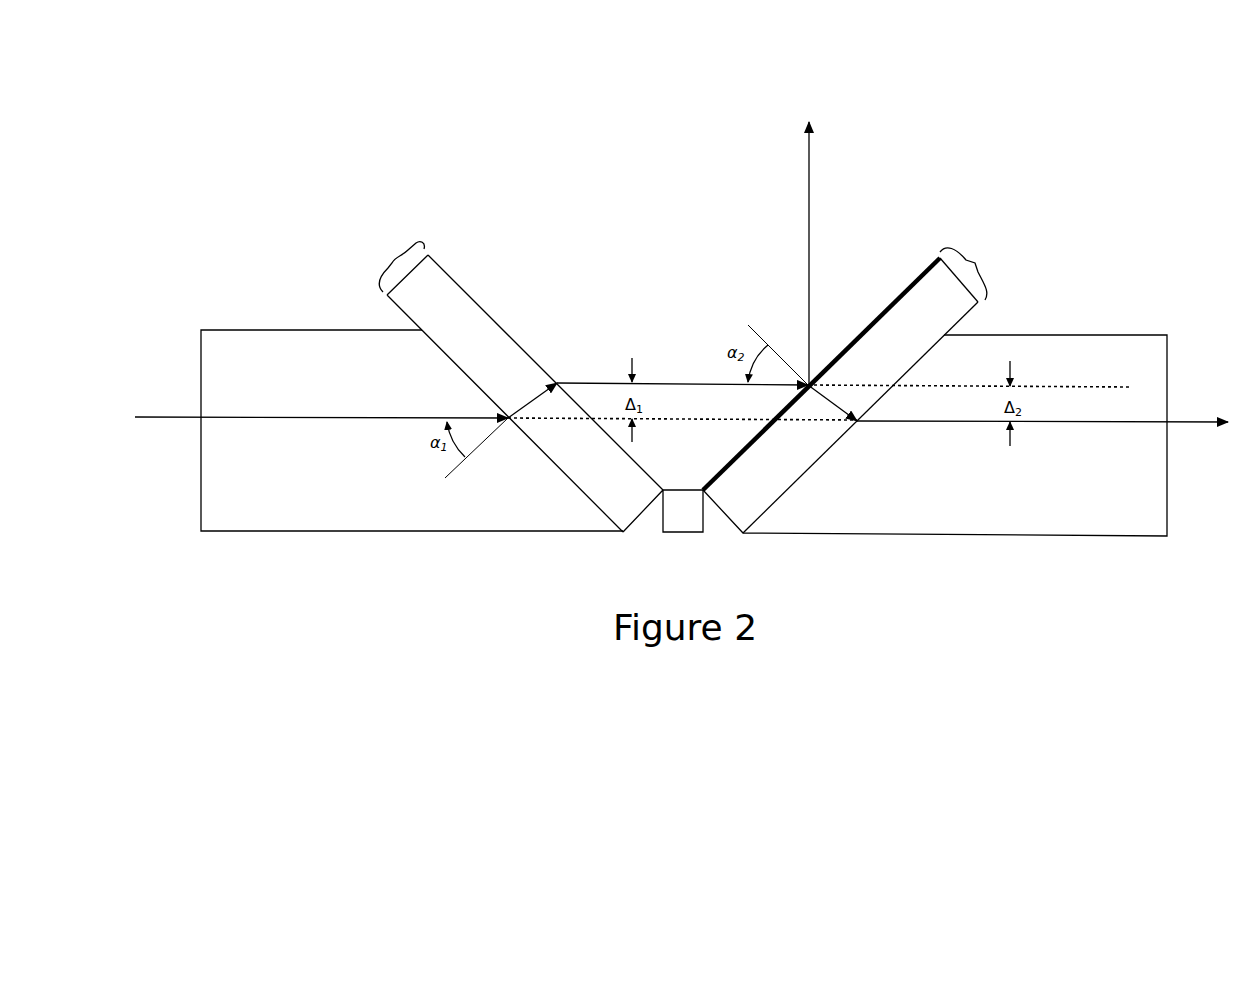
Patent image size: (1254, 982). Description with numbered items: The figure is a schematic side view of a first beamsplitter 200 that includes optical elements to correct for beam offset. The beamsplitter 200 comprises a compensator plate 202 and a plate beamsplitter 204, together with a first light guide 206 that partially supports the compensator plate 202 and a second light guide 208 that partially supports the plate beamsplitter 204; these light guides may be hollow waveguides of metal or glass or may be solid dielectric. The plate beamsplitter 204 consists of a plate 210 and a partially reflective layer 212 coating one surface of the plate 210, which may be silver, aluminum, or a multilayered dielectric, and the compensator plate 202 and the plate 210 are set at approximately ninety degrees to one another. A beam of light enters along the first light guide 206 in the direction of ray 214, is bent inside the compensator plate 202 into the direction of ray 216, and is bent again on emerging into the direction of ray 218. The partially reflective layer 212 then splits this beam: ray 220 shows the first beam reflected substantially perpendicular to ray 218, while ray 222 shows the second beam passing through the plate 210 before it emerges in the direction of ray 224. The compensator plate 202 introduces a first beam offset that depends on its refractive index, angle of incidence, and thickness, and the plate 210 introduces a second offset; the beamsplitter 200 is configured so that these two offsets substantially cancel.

The beamsplitter 200 is at (1007, 125).
The compensator plate 202 is at (386, 295).
The plate beamsplitter 204 is at (1013, 243).
The first light guide 206 is at (303, 534).
The second light guide 208 is at (999, 537).
The plate 210 is at (966, 316).
The partially reflective layer 212 is at (910, 284).
The ray 214 is at (155, 415).
The ray 216 is at (533, 396).
The ray 218 is at (672, 383).
The ray 220 is at (808, 170).
The ray 222 is at (830, 396).
The ray 224 is at (1198, 425).